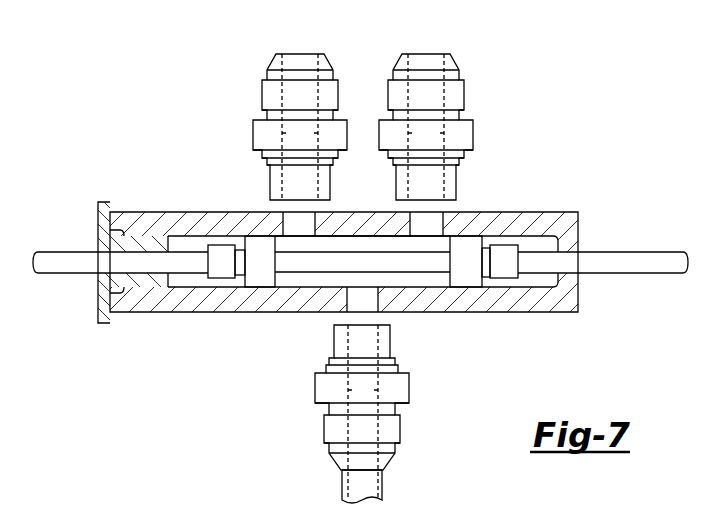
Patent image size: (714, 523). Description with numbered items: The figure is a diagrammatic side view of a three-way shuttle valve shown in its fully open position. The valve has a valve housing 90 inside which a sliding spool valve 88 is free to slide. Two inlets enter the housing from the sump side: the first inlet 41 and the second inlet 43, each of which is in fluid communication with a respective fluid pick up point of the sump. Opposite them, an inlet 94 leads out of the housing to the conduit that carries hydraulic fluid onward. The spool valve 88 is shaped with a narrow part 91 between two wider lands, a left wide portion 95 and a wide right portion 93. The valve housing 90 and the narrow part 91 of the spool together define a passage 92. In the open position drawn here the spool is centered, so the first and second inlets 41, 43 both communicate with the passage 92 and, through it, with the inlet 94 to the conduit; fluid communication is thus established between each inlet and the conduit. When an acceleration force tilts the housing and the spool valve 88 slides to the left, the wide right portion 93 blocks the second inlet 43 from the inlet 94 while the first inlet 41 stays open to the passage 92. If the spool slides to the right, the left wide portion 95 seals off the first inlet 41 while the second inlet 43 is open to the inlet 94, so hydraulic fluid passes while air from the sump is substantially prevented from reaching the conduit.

The first inlet 41 is at (291, 53).
The second inlet 43 is at (432, 53).
The valve housing 90 is at (523, 232).
The sliding spool valve 88 is at (360, 265).
The narrow part 91 is at (437, 267).
The passage 92 is at (364, 246).
The wide right portion 93 is at (465, 268).
The left wide portion 95 is at (258, 276).
The inlet 94 is at (341, 414).